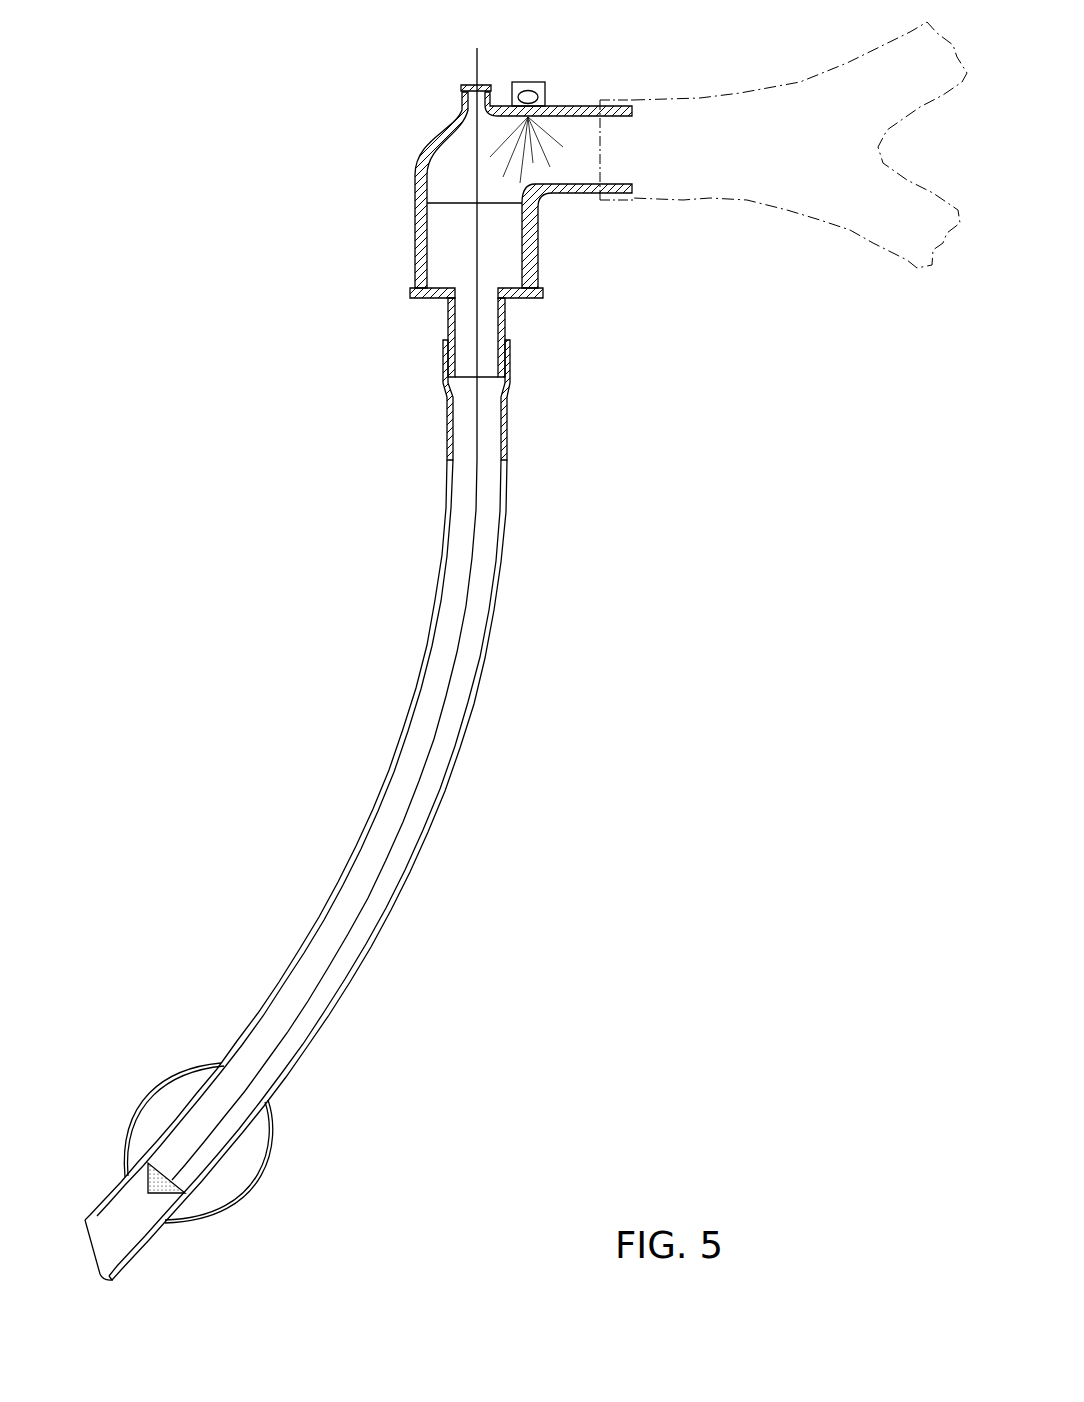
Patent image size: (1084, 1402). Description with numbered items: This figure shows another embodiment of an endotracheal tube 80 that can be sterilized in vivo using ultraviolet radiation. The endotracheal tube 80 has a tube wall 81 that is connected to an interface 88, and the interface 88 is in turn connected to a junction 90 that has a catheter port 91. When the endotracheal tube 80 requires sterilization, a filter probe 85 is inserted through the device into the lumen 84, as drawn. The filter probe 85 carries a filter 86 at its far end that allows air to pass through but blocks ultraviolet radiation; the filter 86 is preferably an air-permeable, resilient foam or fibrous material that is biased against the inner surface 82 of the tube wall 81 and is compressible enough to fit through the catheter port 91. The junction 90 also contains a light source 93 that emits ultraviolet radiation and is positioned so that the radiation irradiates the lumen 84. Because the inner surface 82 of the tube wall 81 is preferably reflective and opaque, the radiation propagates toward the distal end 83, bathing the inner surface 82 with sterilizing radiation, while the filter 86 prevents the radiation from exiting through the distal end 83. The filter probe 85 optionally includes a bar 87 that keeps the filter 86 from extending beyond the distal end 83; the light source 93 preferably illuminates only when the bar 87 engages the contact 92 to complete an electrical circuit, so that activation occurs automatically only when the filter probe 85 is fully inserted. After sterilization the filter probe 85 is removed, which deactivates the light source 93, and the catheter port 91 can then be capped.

The endotracheal tube 80 is at (255, 148).
The tube wall 81 is at (505, 553).
The inner surface 82 is at (483, 622).
The distal end 83 is at (92, 1270).
The lumen 84 is at (490, 438).
The filter probe 85 is at (477, 470).
The filter 86 is at (150, 1185).
The bar 87 is at (487, 85).
The interface 88 is at (543, 295).
The junction 90 is at (575, 106).
The catheter port 91 is at (443, 85).
The contact 92 is at (461, 88).
The light source 93 is at (533, 82).